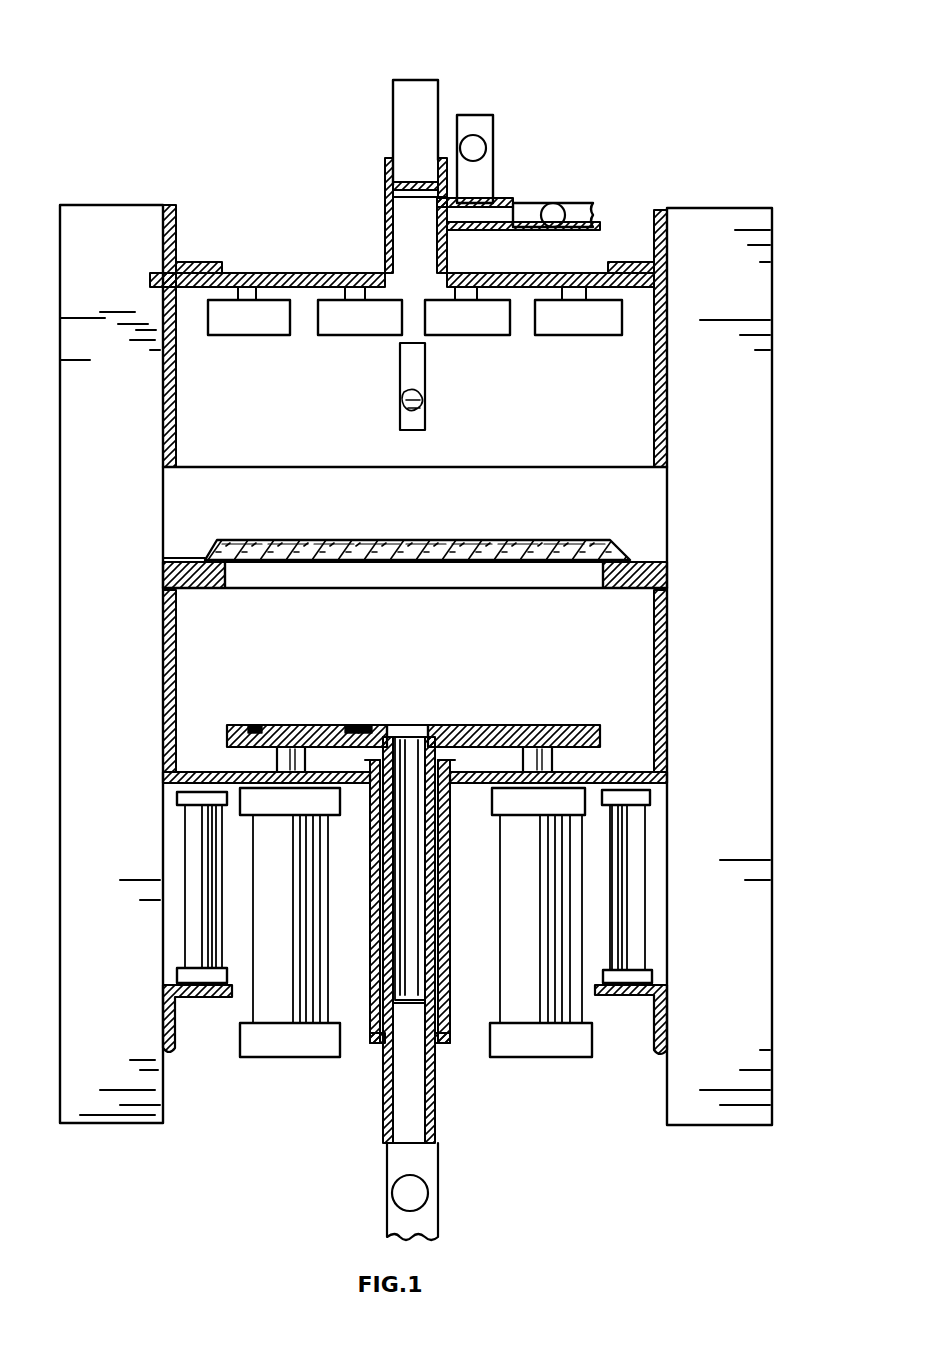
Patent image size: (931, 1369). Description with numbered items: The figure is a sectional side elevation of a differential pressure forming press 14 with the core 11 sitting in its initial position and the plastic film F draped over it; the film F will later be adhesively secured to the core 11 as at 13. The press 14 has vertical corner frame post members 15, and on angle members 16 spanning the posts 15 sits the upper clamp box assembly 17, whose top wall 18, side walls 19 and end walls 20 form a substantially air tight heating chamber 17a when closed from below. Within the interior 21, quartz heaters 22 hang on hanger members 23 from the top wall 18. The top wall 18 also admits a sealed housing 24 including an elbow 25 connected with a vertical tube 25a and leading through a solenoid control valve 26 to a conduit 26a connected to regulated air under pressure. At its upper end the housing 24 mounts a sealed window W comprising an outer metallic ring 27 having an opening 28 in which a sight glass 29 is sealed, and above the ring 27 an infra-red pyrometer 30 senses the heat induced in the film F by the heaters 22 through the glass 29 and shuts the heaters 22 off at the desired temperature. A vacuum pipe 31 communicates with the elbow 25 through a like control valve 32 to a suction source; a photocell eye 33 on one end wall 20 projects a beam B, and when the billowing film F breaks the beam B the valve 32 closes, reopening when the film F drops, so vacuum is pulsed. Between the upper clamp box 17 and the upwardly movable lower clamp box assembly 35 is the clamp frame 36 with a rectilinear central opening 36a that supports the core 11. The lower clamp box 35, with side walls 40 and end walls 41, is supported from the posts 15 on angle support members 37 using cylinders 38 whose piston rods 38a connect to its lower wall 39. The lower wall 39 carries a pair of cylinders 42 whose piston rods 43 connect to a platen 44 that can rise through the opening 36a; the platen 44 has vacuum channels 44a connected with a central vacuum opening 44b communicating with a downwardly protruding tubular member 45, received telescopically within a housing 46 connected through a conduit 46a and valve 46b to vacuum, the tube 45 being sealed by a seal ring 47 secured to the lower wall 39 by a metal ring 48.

The core 11 is at (428, 562).
The adhesive securement 13 is at (558, 540).
The differential pressure forming press 14 is at (596, 258).
The corner frame post members 15 is at (92, 568).
The angle members 16 is at (176, 240).
The upper clamp box assembly 17 is at (160, 409).
The heating chamber 17a is at (215, 357).
The top wall 18 is at (520, 303).
The side walls 19 is at (653, 430).
The end walls 20 is at (486, 417).
The interior 21 is at (248, 443).
The quartz heaters 22 is at (318, 336).
The hanger members 23 is at (320, 298).
The sealed housing 24 is at (456, 196).
The elbow 25 is at (472, 234).
The vertical tube 25a is at (407, 250).
The control valve 26 is at (561, 202).
The conduit 26a is at (576, 226).
The outer metallic ring 27 is at (385, 190).
The opening 28 is at (439, 160).
The sight glass 29 is at (414, 182).
The infra-red pyrometer 30 is at (404, 80).
The vacuum pipe 31 is at (484, 194).
The control valve 32 is at (472, 120).
The photocell eye 33 is at (404, 427).
The lower clamp box assembly 35 is at (160, 719).
The clamp frame 36 is at (206, 592).
The central opening 36a is at (330, 592).
The angle support members 37 is at (184, 1044).
The cylinders 38 is at (190, 930).
The piston rods 38a is at (198, 804).
The lower wall 39 is at (664, 777).
The side walls 40 is at (672, 685).
The end walls 41 is at (620, 640).
The cylinders 42 is at (266, 995).
The piston rods 43 is at (274, 757).
The platen 44 is at (540, 725).
The vacuum channels 44a is at (307, 722).
The central vacuum opening 44b is at (378, 726).
The tubular member 45 is at (436, 975).
The housing 46 is at (445, 890).
The conduit 46a is at (425, 1161).
The valve 46b is at (394, 1200).
The seal ring 47 is at (366, 733).
The metal ring 48 is at (452, 760).
The electric eye beam B is at (403, 393).
The plastic film F is at (464, 540).
The sealed window W is at (413, 192).